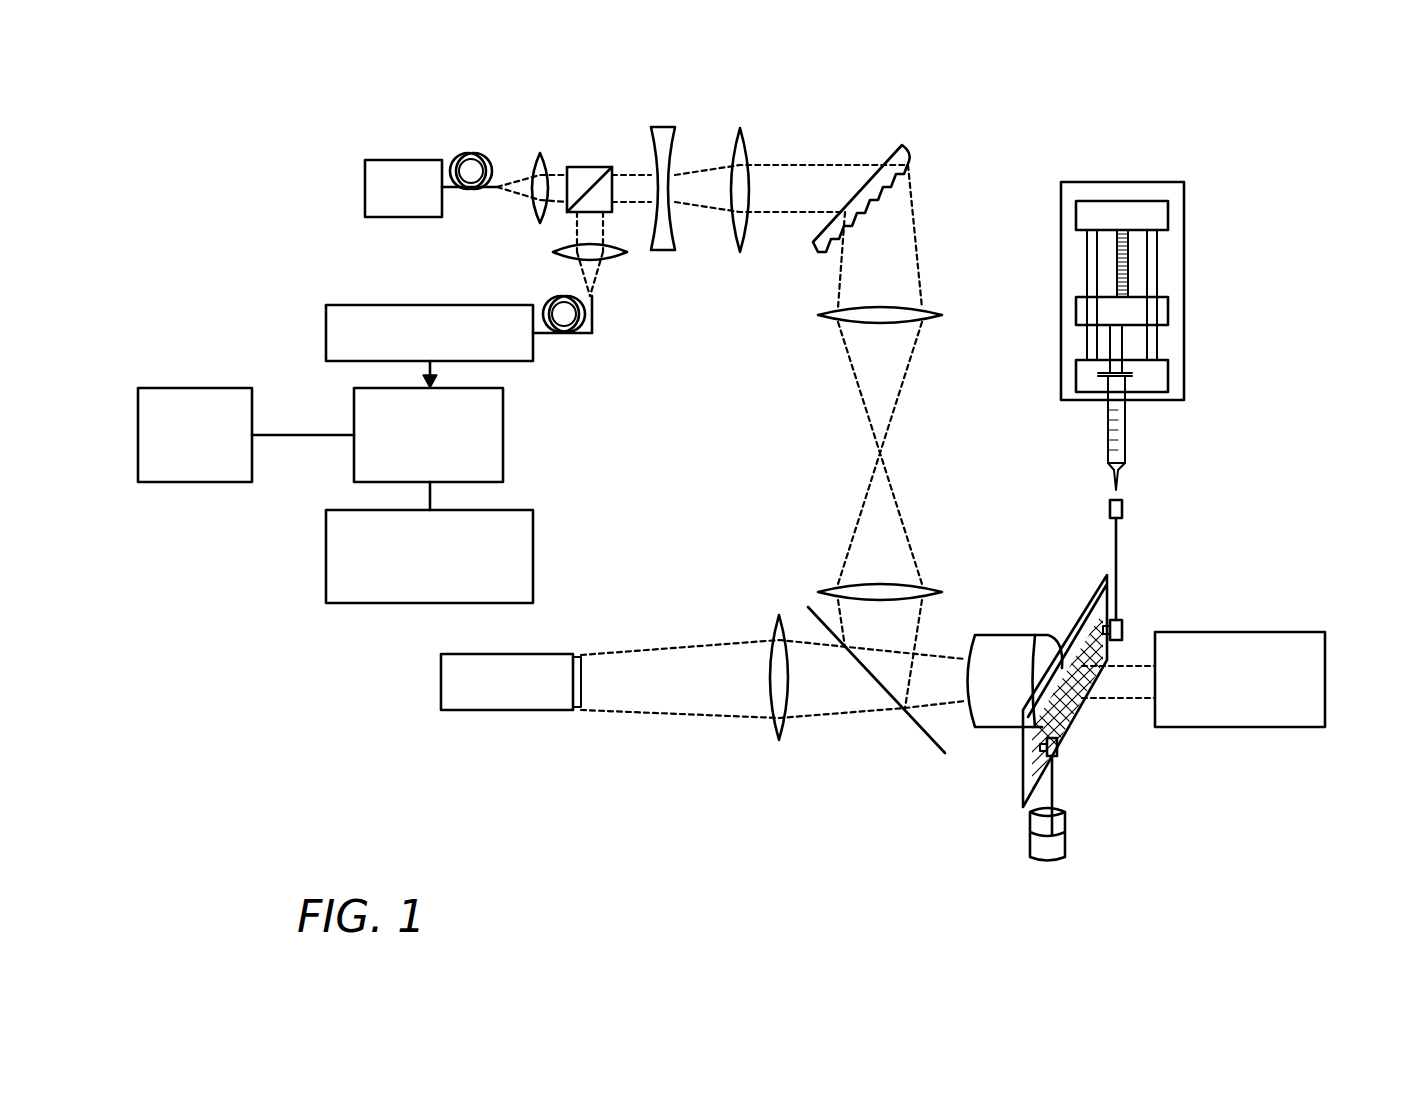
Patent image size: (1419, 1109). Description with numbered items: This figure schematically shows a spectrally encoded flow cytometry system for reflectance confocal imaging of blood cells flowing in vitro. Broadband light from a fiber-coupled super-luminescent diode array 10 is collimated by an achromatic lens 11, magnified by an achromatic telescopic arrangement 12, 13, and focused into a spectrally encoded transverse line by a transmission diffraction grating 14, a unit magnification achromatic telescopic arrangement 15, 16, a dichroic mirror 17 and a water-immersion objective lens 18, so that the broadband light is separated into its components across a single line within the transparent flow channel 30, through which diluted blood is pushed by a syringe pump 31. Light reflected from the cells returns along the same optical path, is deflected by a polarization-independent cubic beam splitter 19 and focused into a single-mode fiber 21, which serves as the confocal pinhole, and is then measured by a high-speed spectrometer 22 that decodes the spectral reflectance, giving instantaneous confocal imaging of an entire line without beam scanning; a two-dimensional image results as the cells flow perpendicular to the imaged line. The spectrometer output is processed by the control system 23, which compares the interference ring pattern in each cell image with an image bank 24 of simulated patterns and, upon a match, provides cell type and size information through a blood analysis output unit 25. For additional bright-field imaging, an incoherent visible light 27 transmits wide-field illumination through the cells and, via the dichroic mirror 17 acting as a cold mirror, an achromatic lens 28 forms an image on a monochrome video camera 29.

The super-luminescent diode array 10 is at (395, 160).
The achromatic lens 11 is at (536, 152).
The achromatic telescopic arrangement 12 is at (656, 127).
The achromatic telescopic arrangement 13 is at (734, 128).
The transmission diffraction grating 14 is at (902, 145).
The unit magnification achromatic telescopic arrangement 15 is at (942, 315).
The unit magnification achromatic telescopic arrangement 16 is at (820, 592).
The dichroic mirror 17 is at (930, 743).
The objective lens 18 is at (1015, 635).
The cubic beam splitter 19 is at (592, 166).
The single-mode fiber 21 is at (568, 335).
The spectrometer 22 is at (326, 329).
The control system 23 is at (503, 440).
The image bank 24 is at (194, 388).
The blood analysis output unit 25 is at (533, 565).
The incoherent visible light 27 is at (1325, 685).
The achromatic lens 28 is at (779, 740).
The monochrome video camera 29 is at (441, 678).
The flow channel 30 is at (1070, 728).
The syringe pump 31 is at (1185, 293).